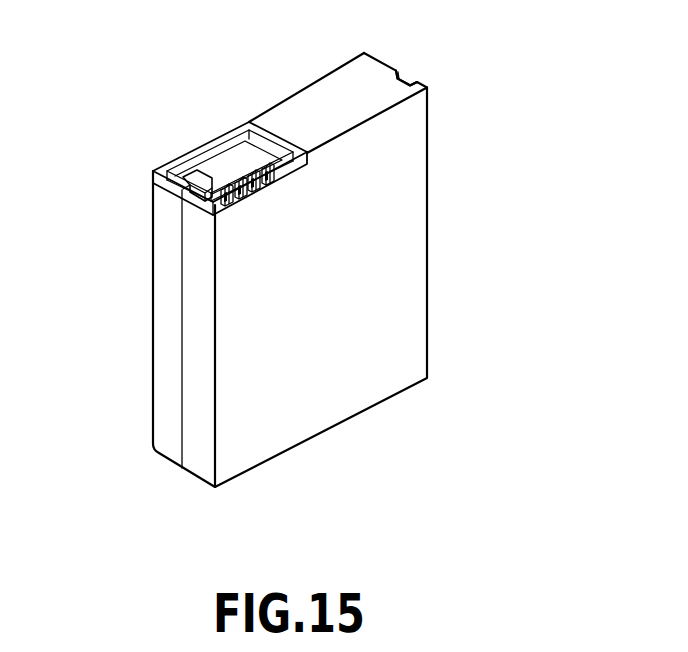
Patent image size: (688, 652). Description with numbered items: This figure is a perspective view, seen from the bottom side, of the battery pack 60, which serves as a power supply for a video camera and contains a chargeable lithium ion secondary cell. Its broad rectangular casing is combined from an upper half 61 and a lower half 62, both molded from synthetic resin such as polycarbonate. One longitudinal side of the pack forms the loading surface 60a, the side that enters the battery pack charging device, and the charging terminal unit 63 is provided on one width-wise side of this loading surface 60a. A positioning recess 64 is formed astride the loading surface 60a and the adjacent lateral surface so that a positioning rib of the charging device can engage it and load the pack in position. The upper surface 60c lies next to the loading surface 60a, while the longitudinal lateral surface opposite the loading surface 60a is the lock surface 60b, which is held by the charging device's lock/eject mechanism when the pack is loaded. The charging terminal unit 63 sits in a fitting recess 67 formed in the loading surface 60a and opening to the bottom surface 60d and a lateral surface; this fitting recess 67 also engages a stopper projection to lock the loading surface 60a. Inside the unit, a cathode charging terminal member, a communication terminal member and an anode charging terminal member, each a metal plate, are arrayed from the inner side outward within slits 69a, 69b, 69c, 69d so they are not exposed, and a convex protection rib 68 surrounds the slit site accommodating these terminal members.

The battery pack 60 is at (97, 80).
The loading surface 60a is at (325, 88).
The lock surface 60b is at (295, 449).
The upper surface 60c is at (150, 336).
The bottom surface 60d is at (430, 330).
The upper half 61 is at (165, 447).
The lower half 62 is at (204, 466).
The charging terminal unit 63 is at (226, 118).
The positioning recess 64 is at (414, 80).
The fitting recess 67 is at (180, 190).
The protection rib 68 is at (197, 200).
The slit 69a is at (283, 180).
The slit 69b is at (266, 187).
The slit 69c is at (250, 193).
The slit 69d is at (240, 197).